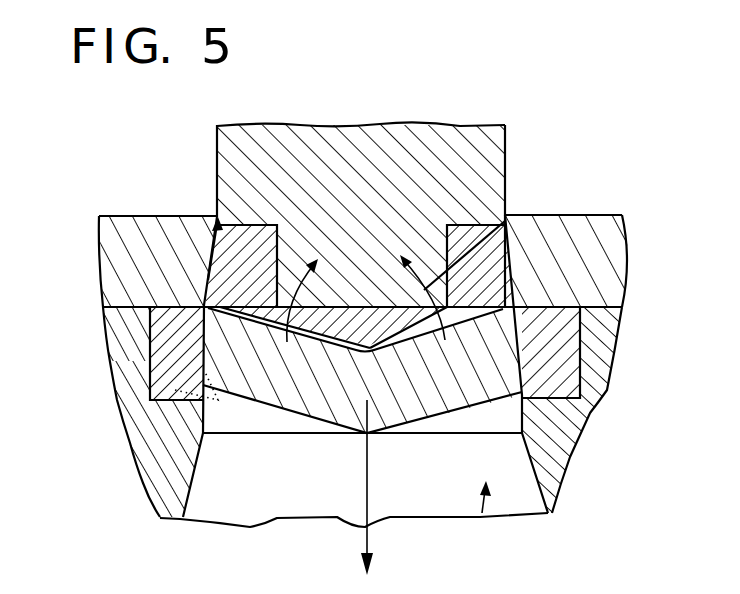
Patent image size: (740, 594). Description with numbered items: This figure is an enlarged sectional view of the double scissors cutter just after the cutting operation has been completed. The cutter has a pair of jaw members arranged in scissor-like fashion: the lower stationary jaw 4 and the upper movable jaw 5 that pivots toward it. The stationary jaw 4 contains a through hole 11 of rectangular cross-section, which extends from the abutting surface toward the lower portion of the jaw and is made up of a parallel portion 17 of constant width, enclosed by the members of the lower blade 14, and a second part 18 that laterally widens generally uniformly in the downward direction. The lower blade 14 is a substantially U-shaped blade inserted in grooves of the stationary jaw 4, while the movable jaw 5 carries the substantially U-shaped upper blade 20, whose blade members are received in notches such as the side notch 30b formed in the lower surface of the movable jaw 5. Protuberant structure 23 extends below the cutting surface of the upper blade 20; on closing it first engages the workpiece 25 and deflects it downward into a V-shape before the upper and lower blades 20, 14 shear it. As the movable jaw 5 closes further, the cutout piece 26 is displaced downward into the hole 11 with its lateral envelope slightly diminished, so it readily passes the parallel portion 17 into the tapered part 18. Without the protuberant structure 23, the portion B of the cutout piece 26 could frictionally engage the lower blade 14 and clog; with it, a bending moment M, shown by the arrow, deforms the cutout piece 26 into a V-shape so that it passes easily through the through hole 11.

The movable jaw 5 is at (492, 150).
The notch 30b is at (277, 227).
The upper blade 20 is at (217, 260).
The bending moment M is at (505, 215).
The workpiece 25 is at (591, 237).
The portion of the cutout piece B is at (110, 432).
The lower blade 14 is at (150, 361).
The protuberant structure 23 is at (333, 328).
The cutout piece 26 is at (452, 390).
The stationary jaw 4 is at (557, 460).
The parallel portion 17 is at (228, 418).
The second part of the through hole 18 is at (285, 507).
The through hole 11 is at (482, 513).